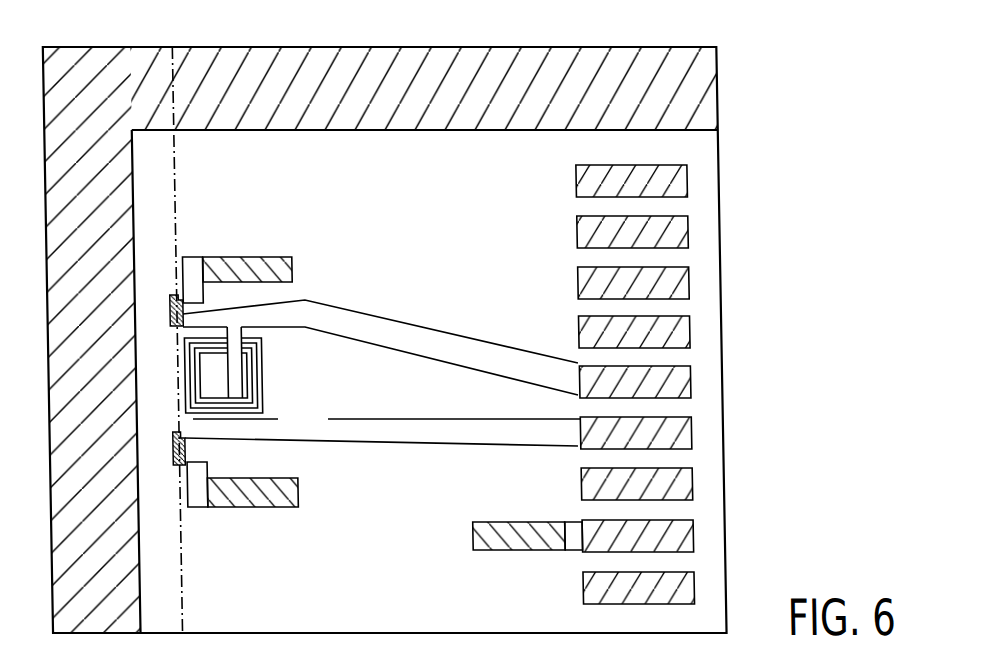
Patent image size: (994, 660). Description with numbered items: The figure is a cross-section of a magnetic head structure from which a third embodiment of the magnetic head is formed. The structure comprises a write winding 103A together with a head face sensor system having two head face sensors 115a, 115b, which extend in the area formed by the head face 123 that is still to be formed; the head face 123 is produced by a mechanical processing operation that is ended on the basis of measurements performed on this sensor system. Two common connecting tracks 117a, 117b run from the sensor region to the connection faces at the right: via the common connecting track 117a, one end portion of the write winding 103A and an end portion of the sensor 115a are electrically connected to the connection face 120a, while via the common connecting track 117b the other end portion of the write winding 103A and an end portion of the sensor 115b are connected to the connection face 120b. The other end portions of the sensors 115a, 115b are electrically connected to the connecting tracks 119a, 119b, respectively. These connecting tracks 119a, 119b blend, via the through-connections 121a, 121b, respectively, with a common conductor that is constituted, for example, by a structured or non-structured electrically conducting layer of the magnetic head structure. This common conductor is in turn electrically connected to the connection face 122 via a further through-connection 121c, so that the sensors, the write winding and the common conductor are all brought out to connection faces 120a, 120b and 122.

The head face 123 is at (173, 182).
The head face sensor 115a is at (165, 303).
The head face sensor 115b is at (165, 445).
The connecting track 119a is at (186, 265).
The connecting track 119b is at (192, 492).
The through-connection 121a is at (271, 265).
The through-connection 121b is at (274, 488).
The through-connection 121c is at (528, 533).
The common connecting track 117a is at (377, 330).
The common connecting track 117b is at (372, 427).
The write winding 103A is at (246, 385).
The connection face 120a is at (656, 385).
The connection face 120b is at (652, 438).
The connection face 122 is at (650, 543).